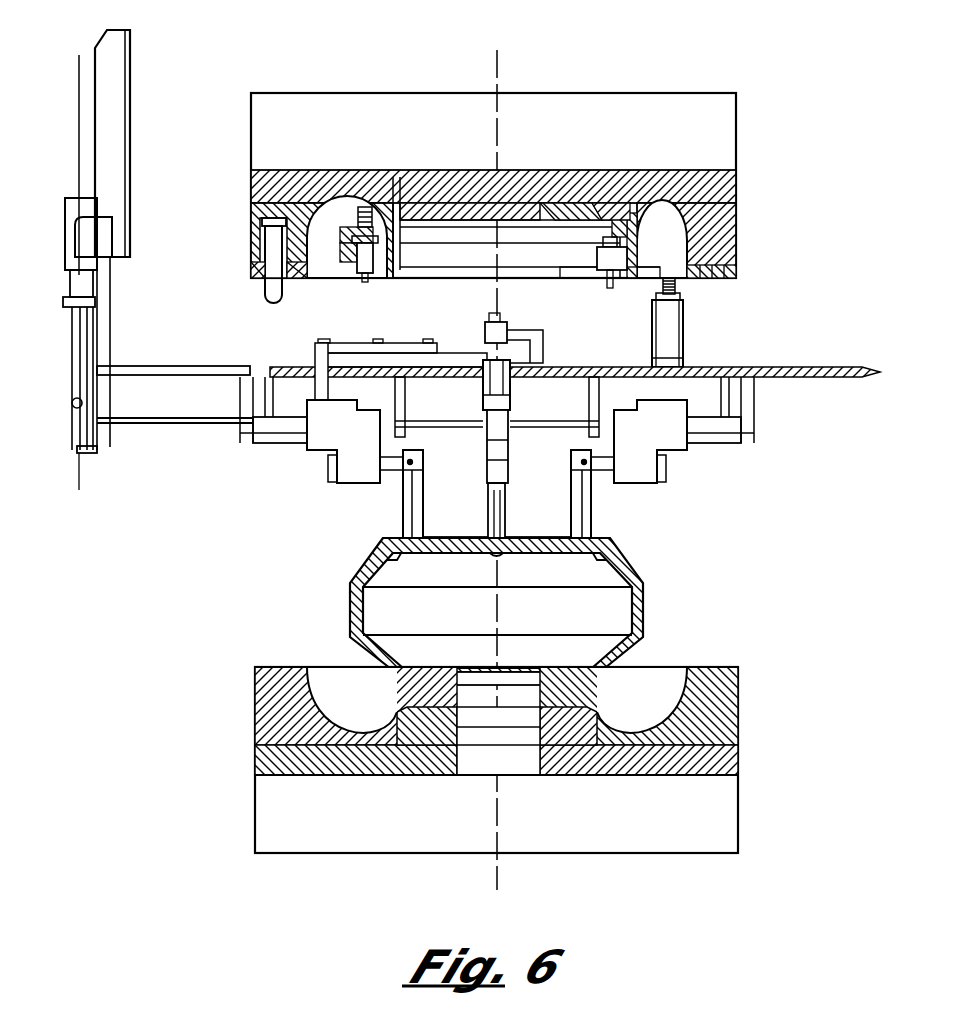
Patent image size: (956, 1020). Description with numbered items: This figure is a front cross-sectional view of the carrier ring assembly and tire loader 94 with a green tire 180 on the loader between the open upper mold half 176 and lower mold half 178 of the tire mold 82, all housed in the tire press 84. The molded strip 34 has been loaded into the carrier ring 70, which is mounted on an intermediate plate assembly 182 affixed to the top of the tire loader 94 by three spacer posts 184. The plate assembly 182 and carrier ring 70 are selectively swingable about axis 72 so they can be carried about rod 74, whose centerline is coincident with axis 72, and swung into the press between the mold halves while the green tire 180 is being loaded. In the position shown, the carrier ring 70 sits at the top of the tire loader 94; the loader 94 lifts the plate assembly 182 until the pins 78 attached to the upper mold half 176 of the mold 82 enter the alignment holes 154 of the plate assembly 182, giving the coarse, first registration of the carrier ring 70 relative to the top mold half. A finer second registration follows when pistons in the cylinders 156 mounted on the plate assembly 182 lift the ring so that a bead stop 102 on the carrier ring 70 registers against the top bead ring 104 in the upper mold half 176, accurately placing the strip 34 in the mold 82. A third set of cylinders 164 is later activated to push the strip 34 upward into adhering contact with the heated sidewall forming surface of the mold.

The axis 72 is at (79, 166).
The rod 74 is at (97, 452).
The upper mold half 176 is at (226, 219).
The tire press 84 is at (738, 186).
The tire mold 82 is at (297, 197).
The carrier ring 70 is at (687, 192).
The pins 78 is at (267, 290).
The alignment holes 154 is at (250, 254).
The strip 34 is at (365, 212).
The bead stop 102 is at (570, 202).
The top bead ring 104 is at (613, 203).
The third set of cylinders 164 is at (367, 275).
The cylinders 156 is at (605, 268).
The intermediate plate assembly 182 is at (700, 280).
The spacer posts 184 is at (685, 330).
The tire loader 94 is at (591, 507).
The green tire 180 is at (642, 595).
The lower mold half 178 is at (738, 680).